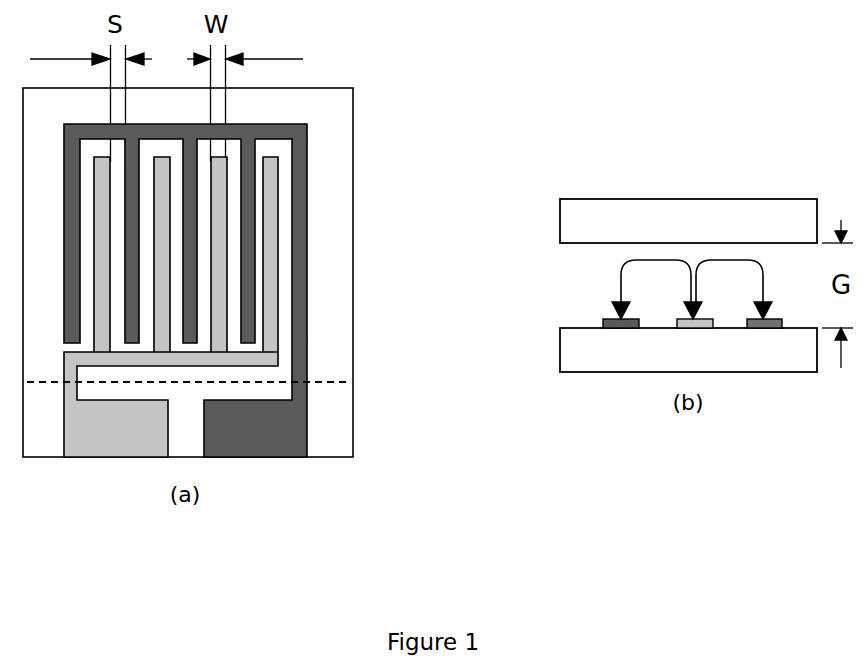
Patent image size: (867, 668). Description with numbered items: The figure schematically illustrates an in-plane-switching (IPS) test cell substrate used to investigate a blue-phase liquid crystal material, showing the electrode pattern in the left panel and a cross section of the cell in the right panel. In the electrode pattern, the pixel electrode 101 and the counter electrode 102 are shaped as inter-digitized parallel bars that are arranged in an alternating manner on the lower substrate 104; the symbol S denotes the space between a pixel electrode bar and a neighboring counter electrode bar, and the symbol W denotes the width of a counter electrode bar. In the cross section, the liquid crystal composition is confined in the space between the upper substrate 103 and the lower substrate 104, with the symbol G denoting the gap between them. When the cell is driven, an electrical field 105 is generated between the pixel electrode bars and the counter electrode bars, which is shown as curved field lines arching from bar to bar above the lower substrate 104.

The pixel electrode 101 is at (303, 278).
The counter electrode 102 is at (273, 338).
The upper substrate 103 is at (688, 221).
The lower substrate 104 is at (688, 350).
The electrical field 105 is at (618, 291).